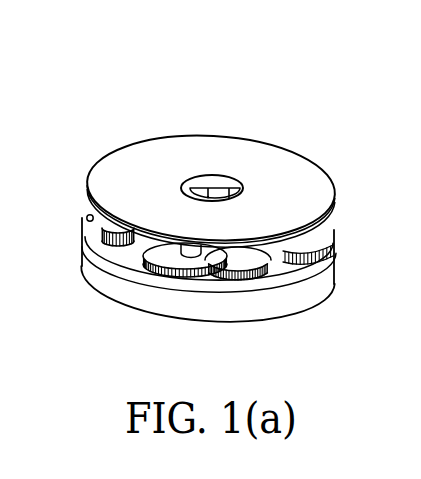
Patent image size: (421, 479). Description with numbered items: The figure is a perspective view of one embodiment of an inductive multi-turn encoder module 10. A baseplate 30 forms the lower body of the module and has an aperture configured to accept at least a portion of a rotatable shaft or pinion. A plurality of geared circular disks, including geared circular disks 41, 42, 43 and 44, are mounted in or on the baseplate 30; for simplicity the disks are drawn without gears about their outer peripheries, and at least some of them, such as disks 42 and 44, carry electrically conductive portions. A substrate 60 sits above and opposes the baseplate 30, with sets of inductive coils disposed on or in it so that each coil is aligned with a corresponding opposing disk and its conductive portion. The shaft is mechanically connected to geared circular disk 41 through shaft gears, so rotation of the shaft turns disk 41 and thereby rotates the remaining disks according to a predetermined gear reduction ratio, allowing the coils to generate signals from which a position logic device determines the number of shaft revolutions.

The multi-turn encoder module 10 is at (100, 86).
The baseplate 30 is at (320, 276).
The geared circular disk 41 is at (330, 241).
The geared circular disk 42 is at (264, 263).
The geared circular disk 43 is at (158, 276).
The geared circular disk 44 is at (87, 217).
The substrate 60 is at (306, 174).